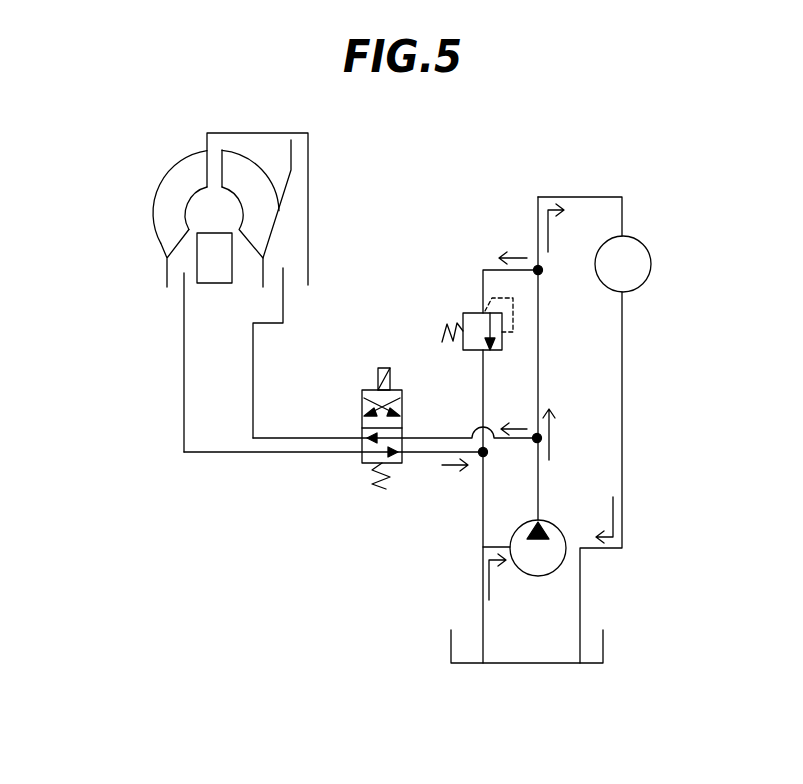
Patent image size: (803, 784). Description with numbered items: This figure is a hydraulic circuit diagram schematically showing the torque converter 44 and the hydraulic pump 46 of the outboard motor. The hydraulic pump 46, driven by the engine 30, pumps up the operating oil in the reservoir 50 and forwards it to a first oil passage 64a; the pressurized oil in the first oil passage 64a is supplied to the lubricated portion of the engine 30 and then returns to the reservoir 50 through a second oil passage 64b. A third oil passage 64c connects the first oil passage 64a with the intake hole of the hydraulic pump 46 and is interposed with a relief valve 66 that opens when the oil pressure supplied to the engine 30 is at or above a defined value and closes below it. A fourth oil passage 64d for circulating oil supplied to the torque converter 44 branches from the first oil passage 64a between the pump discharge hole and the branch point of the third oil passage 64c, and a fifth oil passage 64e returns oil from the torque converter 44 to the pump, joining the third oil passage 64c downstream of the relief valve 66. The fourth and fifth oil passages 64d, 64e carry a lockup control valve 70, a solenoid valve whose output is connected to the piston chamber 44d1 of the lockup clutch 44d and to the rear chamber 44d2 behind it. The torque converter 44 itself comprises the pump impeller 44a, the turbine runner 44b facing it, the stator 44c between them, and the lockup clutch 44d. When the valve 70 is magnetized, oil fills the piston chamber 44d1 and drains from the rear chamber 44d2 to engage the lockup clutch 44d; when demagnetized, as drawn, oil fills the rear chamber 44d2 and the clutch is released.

The torque converter 44 is at (221, 281).
The pump impeller 44a is at (167, 237).
The turbine runner 44b is at (260, 227).
The stator 44c is at (213, 268).
The lockup clutch 44d is at (291, 172).
The piston chamber 44d1 is at (255, 147).
The rear chamber 44d2 is at (293, 268).
The lockup control valve 70 is at (363, 390).
The first oil passage 64a is at (540, 352).
The second oil passage 64b is at (622, 385).
The third oil passage 64c is at (482, 283).
The fourth oil passage 64d is at (435, 438).
The fifth oil passage 64e is at (427, 452).
The relief valve 66 is at (462, 315).
The engine 30 is at (650, 250).
The hydraulic pump 46 is at (548, 520).
The reservoir 50 is at (605, 643).